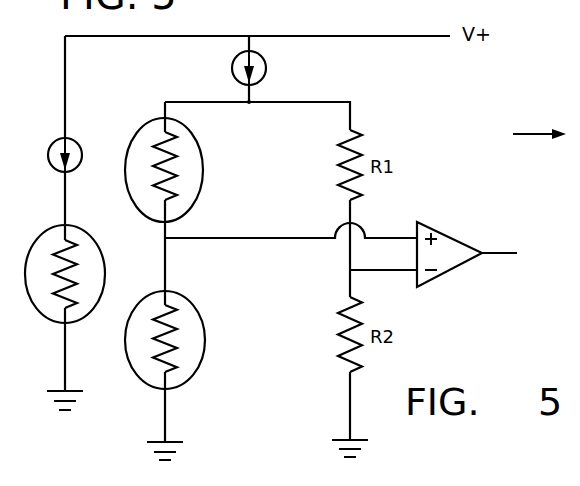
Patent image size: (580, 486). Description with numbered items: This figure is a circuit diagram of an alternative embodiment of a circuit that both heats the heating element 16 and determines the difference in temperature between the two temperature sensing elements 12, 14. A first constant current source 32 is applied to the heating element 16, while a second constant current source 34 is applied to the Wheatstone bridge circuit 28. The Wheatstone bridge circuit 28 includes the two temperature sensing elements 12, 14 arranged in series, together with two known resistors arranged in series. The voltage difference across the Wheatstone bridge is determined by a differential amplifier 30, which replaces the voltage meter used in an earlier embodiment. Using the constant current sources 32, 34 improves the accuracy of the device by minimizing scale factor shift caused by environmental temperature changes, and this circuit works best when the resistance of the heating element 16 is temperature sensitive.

The temperature sensing element 12 is at (192, 353).
The temperature sensing element 14 is at (145, 150).
The heating element 16 is at (95, 292).
The Wheatstone bridge circuit 28 is at (274, 86).
The differential amplifier 30 is at (450, 238).
The first constant current source 32 is at (57, 143).
The second constant current source 34 is at (233, 68).